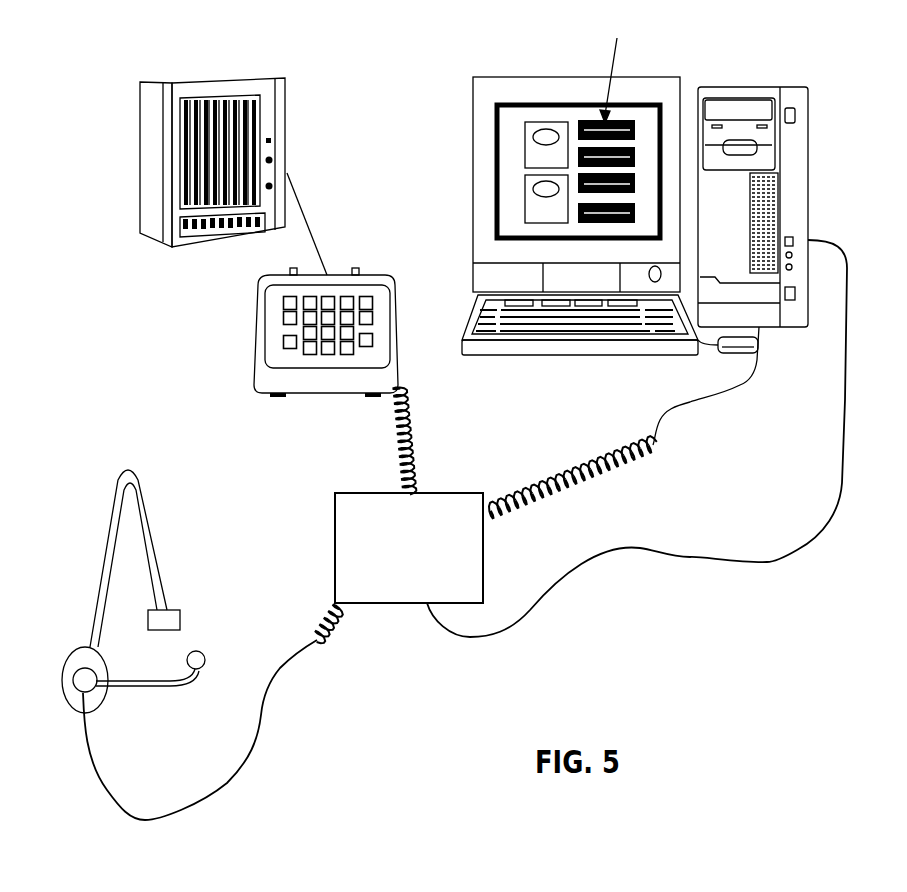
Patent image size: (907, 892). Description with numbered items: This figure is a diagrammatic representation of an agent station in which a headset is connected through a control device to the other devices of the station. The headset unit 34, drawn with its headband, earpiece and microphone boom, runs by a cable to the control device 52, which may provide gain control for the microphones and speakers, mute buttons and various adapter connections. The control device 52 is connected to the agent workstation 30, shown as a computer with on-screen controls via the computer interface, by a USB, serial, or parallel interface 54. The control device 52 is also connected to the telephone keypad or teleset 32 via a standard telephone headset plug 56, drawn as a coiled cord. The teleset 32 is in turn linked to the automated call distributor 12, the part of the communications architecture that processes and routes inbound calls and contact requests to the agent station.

The automated call distributor 12 is at (268, 77).
The agent workstation 30 is at (473, 122).
The telephone keypad 32 is at (393, 283).
The headset unit 34 is at (98, 557).
The control device 52 is at (335, 520).
The USB, serial, or parallel interface 54 is at (840, 443).
The standard telephone headset plug 56 is at (413, 423).